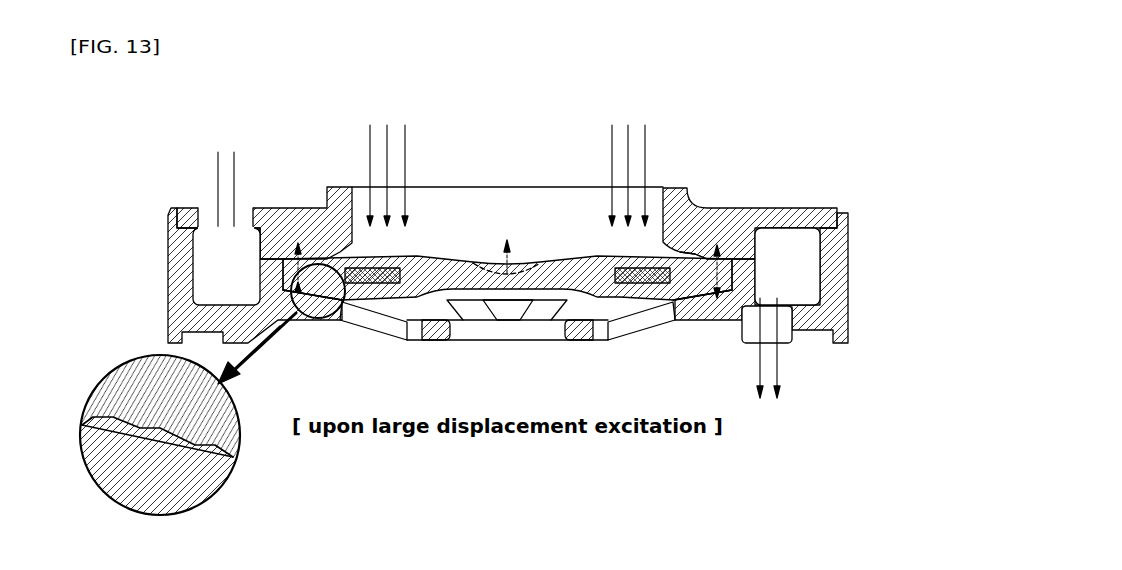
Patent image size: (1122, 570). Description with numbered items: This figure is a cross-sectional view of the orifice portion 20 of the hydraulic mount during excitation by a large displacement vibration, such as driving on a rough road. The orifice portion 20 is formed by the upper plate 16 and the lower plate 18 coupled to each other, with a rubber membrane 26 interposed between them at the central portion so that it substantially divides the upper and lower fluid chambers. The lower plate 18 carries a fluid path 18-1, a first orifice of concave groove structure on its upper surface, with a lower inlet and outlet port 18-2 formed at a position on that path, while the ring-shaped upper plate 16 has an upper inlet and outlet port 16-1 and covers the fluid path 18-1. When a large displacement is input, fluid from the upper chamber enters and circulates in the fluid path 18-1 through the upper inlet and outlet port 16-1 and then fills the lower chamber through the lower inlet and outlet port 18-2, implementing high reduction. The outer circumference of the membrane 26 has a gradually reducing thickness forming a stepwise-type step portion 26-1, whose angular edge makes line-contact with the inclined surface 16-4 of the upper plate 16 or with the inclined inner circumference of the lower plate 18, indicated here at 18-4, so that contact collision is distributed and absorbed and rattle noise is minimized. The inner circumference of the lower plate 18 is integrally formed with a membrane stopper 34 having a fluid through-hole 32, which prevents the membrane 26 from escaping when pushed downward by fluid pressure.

The upper plate 16 is at (340, 193).
The upper inlet and outlet port 16-1 is at (210, 213).
The inclined surface 16-4 is at (707, 253).
The lower plate 18 is at (833, 280).
The fluid path 18-1 is at (205, 278).
The lower inlet and outlet port 18-2 is at (778, 342).
The support ledge 18-4 is at (360, 302).
The orifice portion 20 is at (503, 239).
The membrane 26 is at (435, 297).
The stepwise-type step portion 26-1 is at (327, 257).
The fluid through-hole 32 is at (556, 332).
The membrane stopper 34 is at (623, 323).